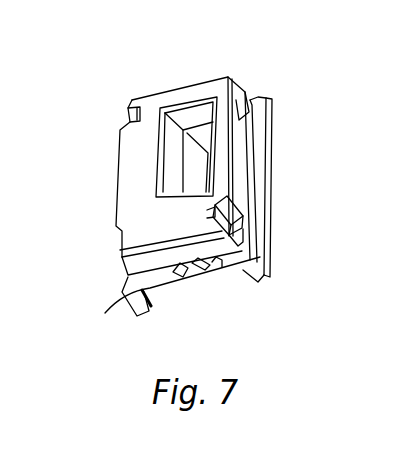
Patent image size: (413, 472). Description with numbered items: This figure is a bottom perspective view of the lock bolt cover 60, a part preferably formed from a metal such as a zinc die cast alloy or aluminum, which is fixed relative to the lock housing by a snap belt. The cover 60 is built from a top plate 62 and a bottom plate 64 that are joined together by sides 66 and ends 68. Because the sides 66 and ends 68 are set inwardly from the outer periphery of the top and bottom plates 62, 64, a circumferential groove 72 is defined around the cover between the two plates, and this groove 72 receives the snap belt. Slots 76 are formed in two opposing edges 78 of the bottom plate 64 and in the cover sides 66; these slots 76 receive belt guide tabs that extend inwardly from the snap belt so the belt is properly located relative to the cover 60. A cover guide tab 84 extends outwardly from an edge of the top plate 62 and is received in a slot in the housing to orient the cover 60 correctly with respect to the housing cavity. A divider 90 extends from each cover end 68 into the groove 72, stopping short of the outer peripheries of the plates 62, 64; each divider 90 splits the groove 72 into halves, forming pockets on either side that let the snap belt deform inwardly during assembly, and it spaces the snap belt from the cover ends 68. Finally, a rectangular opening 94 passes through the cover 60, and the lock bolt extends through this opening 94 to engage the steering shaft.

The lock bolt cover 60 is at (322, 71).
The top plate 62 is at (256, 282).
The bottom plate 64 is at (229, 78).
The sides 66 is at (243, 218).
The ends 68 is at (221, 256).
The circumferential groove 72 is at (128, 277).
The slots 76 is at (142, 111).
The opposing edges 78 is at (236, 165).
The cover guide tab 84 is at (166, 297).
The divider 90 is at (181, 278).
The rectangular opening 94 is at (177, 160).